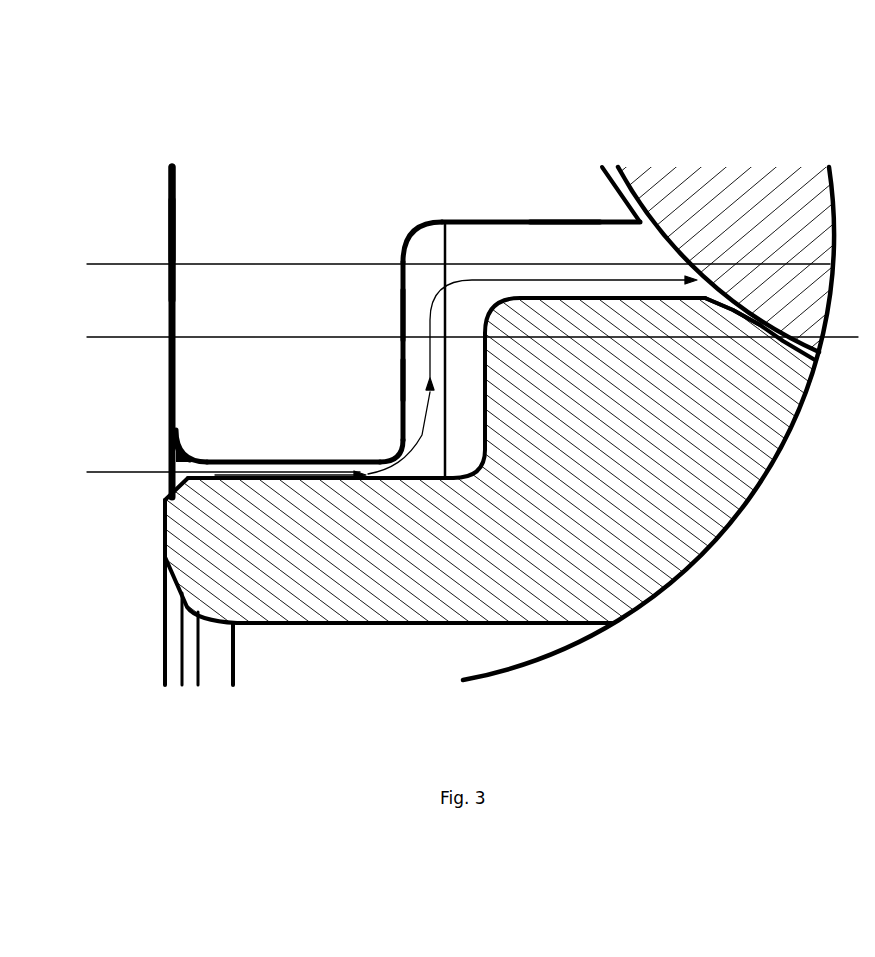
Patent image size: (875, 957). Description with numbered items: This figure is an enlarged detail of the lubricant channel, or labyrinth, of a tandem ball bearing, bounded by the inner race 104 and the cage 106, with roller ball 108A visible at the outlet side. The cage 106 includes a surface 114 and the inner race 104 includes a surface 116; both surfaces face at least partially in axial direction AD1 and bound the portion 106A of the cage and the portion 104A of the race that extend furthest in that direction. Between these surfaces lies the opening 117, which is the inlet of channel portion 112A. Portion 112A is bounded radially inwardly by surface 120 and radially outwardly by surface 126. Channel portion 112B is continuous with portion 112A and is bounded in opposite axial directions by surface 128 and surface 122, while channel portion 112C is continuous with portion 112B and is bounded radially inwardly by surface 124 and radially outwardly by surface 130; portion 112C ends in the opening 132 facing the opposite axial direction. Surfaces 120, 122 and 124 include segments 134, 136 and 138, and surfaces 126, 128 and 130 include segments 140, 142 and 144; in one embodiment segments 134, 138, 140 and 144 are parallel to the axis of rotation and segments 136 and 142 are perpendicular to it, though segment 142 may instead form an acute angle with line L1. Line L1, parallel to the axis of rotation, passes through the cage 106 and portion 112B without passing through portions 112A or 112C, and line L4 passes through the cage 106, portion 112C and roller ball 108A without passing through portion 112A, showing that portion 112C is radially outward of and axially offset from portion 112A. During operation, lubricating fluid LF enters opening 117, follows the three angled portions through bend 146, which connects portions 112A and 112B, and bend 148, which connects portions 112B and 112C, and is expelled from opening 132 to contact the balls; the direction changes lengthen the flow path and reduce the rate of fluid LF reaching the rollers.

The inner race 104 is at (156, 518).
The portion of race extending furthest in axial direction AD1 104A is at (185, 567).
The cage 106 is at (165, 205).
The portion of cage extending furthest in axial direction AD1 106A is at (197, 180).
The roller ball 108A is at (748, 231).
The portion of channel 112A is at (240, 478).
The portion of channel 112B is at (415, 298).
The portion of channel 112C is at (498, 243).
The surface 114 is at (172, 227).
The surface 116 is at (163, 553).
The opening 117 is at (180, 457).
The surface 120 is at (298, 482).
The surface 122 is at (485, 390).
The surface 124 is at (652, 301).
The surface 126 is at (245, 460).
The surface 128 is at (398, 312).
The surface 130 is at (527, 222).
The opening 132 is at (650, 248).
The segment 134 is at (385, 480).
The segment 136 is at (489, 351).
The segment 138 is at (616, 305).
The segment 140 is at (307, 460).
The segment 142 is at (402, 380).
The segment 144 is at (555, 220).
The bend 146 is at (467, 465).
The bend 148 is at (417, 230).
The line L1 is at (140, 337).
The line L4 is at (140, 264).
The lubricating fluid LF is at (140, 471).